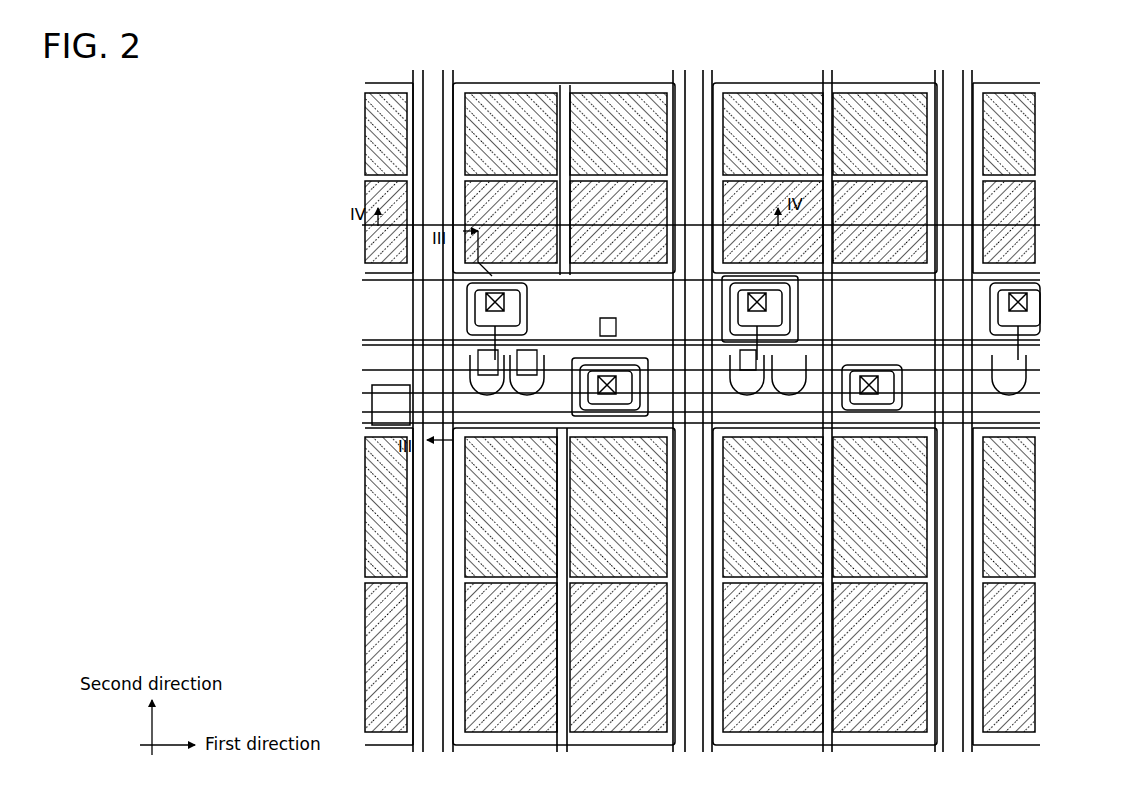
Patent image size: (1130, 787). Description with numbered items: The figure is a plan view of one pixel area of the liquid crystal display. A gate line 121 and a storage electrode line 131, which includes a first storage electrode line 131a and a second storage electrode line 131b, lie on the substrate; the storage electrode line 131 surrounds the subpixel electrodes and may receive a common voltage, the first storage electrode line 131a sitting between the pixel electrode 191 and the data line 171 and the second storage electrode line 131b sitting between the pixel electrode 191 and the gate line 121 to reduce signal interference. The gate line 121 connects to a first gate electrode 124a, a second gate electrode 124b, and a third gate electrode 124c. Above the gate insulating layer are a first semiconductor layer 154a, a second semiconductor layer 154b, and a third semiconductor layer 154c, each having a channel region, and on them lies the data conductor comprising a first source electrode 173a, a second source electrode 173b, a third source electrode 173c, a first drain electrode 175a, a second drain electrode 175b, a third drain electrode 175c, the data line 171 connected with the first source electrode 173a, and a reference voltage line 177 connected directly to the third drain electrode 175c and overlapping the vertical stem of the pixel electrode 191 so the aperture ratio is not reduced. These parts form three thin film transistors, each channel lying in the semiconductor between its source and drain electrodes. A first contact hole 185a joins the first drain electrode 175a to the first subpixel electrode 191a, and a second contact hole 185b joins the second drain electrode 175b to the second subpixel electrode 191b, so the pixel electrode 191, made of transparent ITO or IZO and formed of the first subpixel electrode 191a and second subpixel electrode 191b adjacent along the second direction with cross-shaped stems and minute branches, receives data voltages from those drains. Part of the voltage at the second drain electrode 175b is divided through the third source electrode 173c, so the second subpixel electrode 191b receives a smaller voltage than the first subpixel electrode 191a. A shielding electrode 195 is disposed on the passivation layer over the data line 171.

The gate line 121 is at (415, 342).
The first gate electrode 124a is at (440, 418).
The second gate electrode 124b is at (590, 400).
The third gate electrode 124c is at (760, 250).
The storage electrode line 131 is at (205, 422).
The first storage electrode line 131a is at (665, 92).
The second storage electrode line 131b is at (490, 82).
The first semiconductor layer 154a is at (478, 368).
The second semiconductor layer 154b is at (625, 405).
The third semiconductor layer 154c is at (600, 300).
The data line 171 is at (706, 110).
The first source electrode 173a is at (470, 392).
The second source electrode 173b is at (512, 372).
The third source electrode 173c is at (1000, 350).
The first drain electrode 175a is at (470, 312).
The second drain electrode 175b is at (610, 410).
The third drain electrode 175c is at (530, 345).
The reference voltage line 177 is at (557, 100).
The first contact hole 185a is at (470, 283).
The second contact hole 185b is at (640, 395).
The pixel electrode 191 is at (205, 326).
The first subpixel electrode 191a is at (578, 100).
The second subpixel electrode 191b is at (455, 637).
The shielding electrode 195 is at (715, 140).